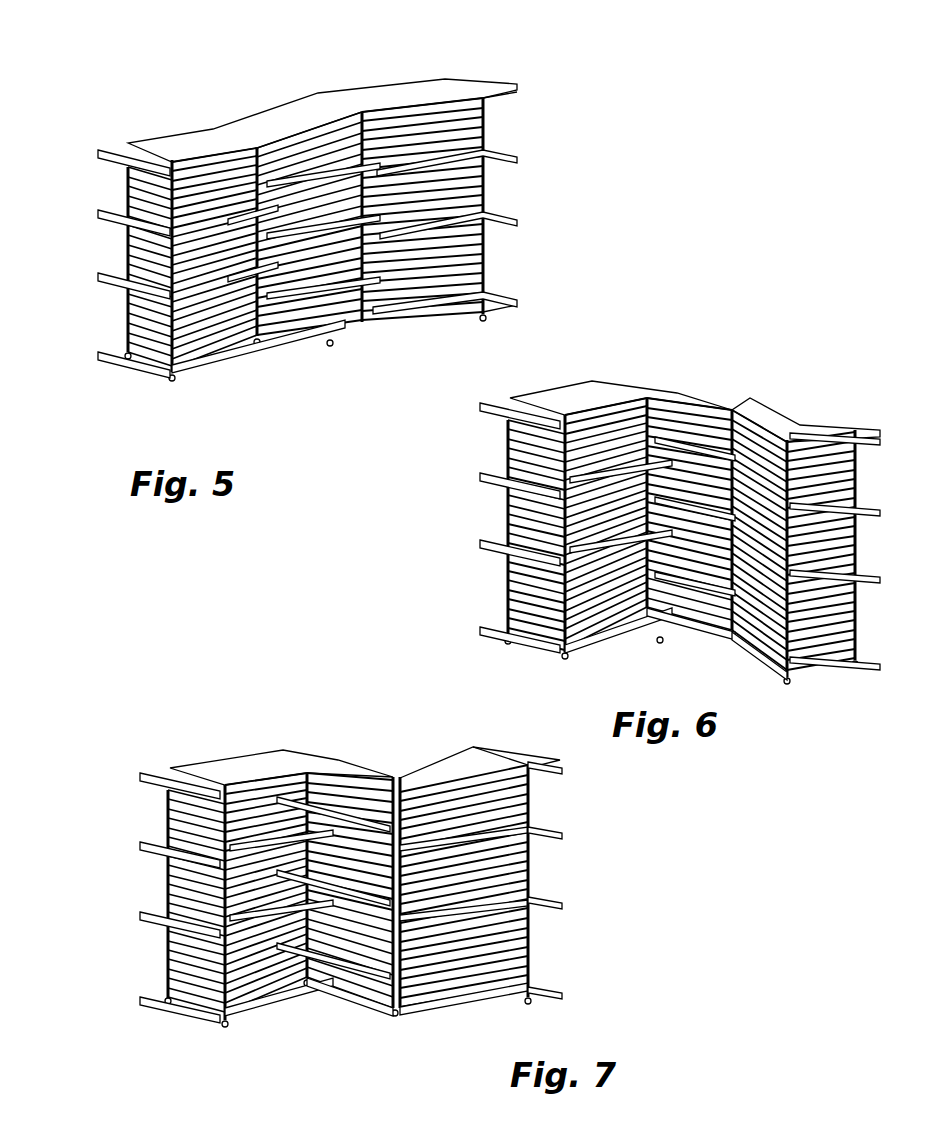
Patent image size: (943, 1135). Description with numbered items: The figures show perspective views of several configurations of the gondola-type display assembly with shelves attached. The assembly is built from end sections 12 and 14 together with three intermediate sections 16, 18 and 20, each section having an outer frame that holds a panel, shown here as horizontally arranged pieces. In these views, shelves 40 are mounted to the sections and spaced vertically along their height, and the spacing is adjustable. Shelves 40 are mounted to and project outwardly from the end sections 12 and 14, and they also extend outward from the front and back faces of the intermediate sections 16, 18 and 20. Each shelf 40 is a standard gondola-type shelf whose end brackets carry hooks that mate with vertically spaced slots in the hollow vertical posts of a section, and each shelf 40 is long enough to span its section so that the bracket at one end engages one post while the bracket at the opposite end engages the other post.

In FIG. 5, the end section 12 is at (85, 158).
In FIG. 6, the end section 12 is at (515, 528).
In FIG. 7, the end section 12 is at (143, 810).
In FIG. 5, the end section 14 is at (536, 208).
In FIG. 6, the end section 14 is at (824, 638).
In FIG. 7, the end section 14 is at (545, 875).
In FIG. 5, the intermediate section 16 is at (200, 102).
In FIG. 6, the intermediate section 16 is at (604, 365).
In FIG. 7, the intermediate section 16 is at (263, 1025).
In FIG. 5, the intermediate section 18 is at (307, 89).
In FIG. 6, the intermediate section 18 is at (696, 380).
In FIG. 7, the intermediate section 18 is at (353, 750).
In FIG. 5, the intermediate section 20 is at (387, 78).
In FIG. 6, the intermediate section 20 is at (793, 407).
In FIG. 7, the intermediate section 20 is at (443, 737).
In FIG. 5, the shelf 40 is at (163, 140).